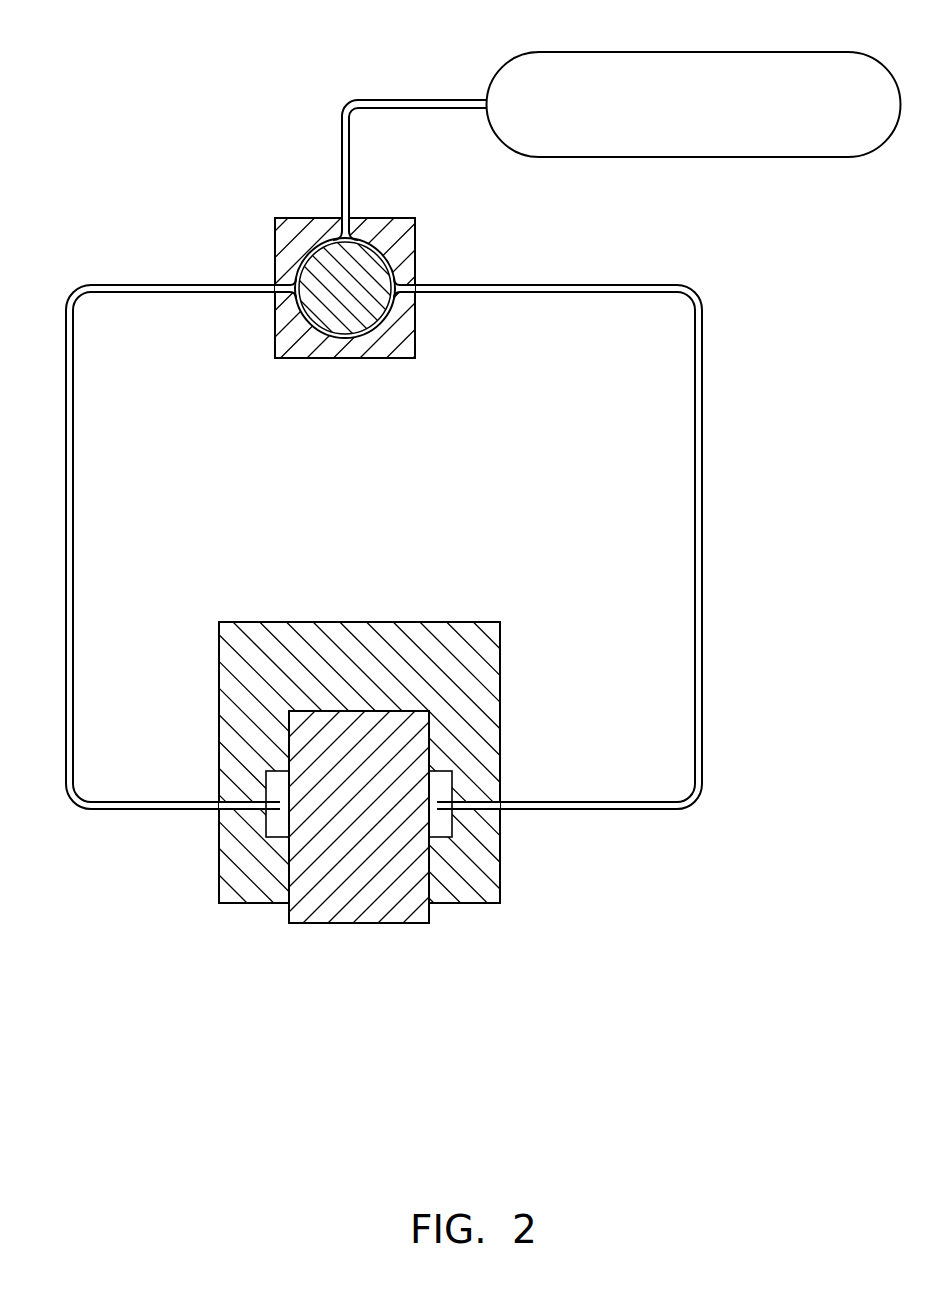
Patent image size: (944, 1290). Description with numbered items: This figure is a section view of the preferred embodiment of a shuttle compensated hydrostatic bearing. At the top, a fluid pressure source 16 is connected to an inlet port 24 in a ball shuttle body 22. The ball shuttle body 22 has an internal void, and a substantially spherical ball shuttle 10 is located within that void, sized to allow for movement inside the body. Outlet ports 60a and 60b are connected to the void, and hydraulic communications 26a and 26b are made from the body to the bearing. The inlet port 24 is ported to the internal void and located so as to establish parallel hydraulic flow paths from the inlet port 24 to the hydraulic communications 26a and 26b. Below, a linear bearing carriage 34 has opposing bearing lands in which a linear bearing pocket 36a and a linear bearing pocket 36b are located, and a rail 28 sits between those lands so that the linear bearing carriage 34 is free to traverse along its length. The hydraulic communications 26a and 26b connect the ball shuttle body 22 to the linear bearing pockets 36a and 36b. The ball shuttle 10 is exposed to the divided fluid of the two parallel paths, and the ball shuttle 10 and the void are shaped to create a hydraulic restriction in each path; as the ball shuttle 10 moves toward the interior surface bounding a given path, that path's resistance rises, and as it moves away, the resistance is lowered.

The fluid pressure source 16 is at (502, 63).
The inlet port 24 is at (335, 218).
The ball shuttle body 22 is at (275, 330).
The ball shuttle 10 is at (352, 338).
The outlet port 60a is at (415, 277).
The outlet port 60b is at (275, 277).
The hydraulic communication 26a is at (694, 624).
The hydraulic communication 26b is at (73, 538).
The linear bearing carriage 34 is at (310, 622).
The rail 28 is at (372, 923).
The linear bearing pocket 36a is at (437, 814).
The linear bearing pocket 36b is at (280, 813).